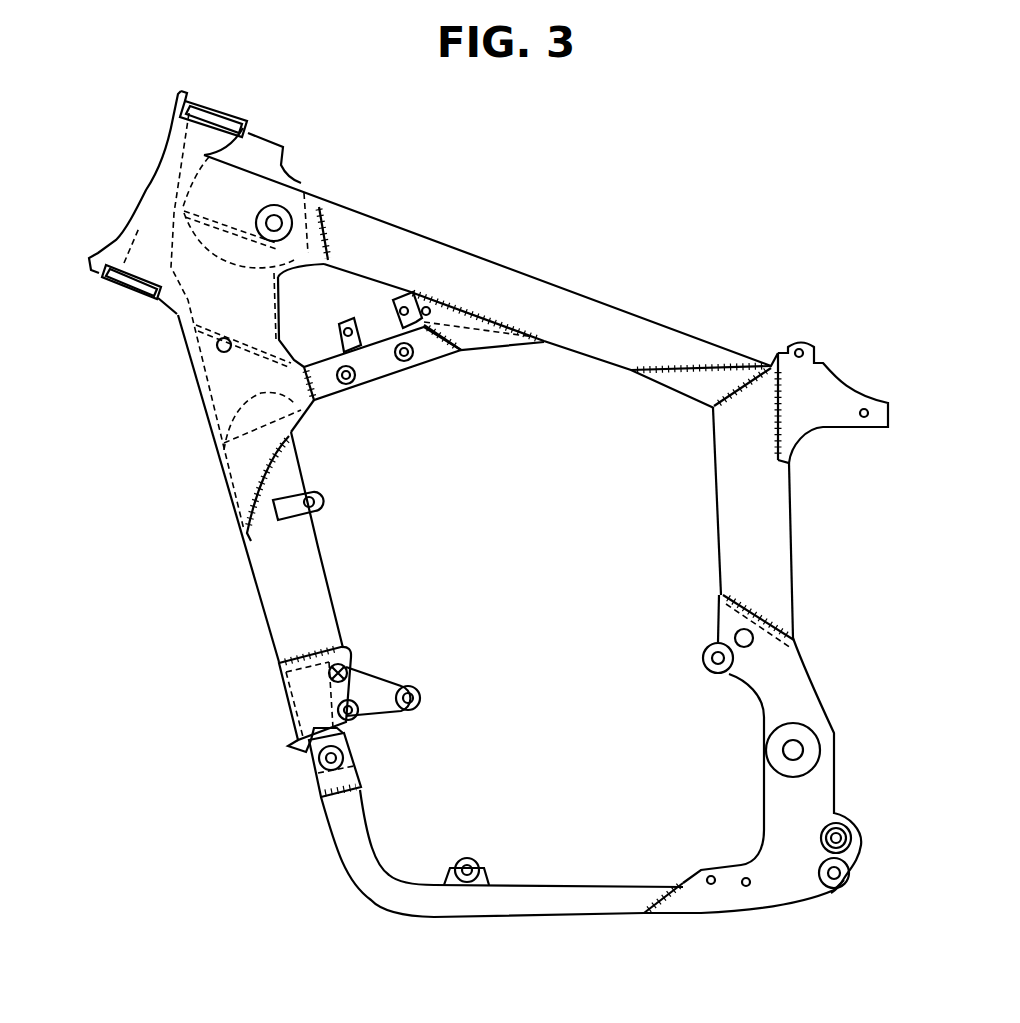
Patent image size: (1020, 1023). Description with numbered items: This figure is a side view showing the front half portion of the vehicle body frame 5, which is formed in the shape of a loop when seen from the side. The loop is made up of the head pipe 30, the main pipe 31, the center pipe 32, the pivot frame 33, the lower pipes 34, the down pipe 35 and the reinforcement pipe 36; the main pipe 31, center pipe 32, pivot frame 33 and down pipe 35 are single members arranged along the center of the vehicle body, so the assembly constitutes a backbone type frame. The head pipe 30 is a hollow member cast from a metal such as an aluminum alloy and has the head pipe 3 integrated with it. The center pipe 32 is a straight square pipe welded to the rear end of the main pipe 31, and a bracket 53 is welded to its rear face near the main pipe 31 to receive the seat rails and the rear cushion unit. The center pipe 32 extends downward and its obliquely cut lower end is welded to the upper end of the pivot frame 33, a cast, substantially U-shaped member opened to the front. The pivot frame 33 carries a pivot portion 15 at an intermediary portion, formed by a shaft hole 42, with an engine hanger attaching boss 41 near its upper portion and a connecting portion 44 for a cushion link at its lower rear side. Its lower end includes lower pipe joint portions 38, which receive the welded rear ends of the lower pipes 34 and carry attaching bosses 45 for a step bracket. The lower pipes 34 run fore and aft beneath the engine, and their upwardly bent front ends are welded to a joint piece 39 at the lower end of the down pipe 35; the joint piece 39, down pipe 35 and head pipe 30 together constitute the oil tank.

The head pipe 3 is at (162, 162).
The vehicle body frame 5 is at (484, 543).
The pivot portion 15 is at (783, 752).
The head pipe 30 is at (171, 245).
The main pipe 31 is at (458, 263).
The center pipe 32 is at (782, 540).
The pivot frame 33 is at (763, 695).
The lower pipes 34 is at (578, 893).
The down pipe 35 is at (270, 592).
The reinforcement pipe 36 is at (377, 370).
The lower pipe joint portions 38 is at (717, 908).
The joint piece 39 is at (307, 703).
The engine hanger attaching boss 41 is at (704, 657).
The shaft hole 42 is at (800, 742).
The connecting portion 44 is at (851, 840).
The attaching bosses 45 is at (750, 884).
The bracket 53 is at (838, 392).